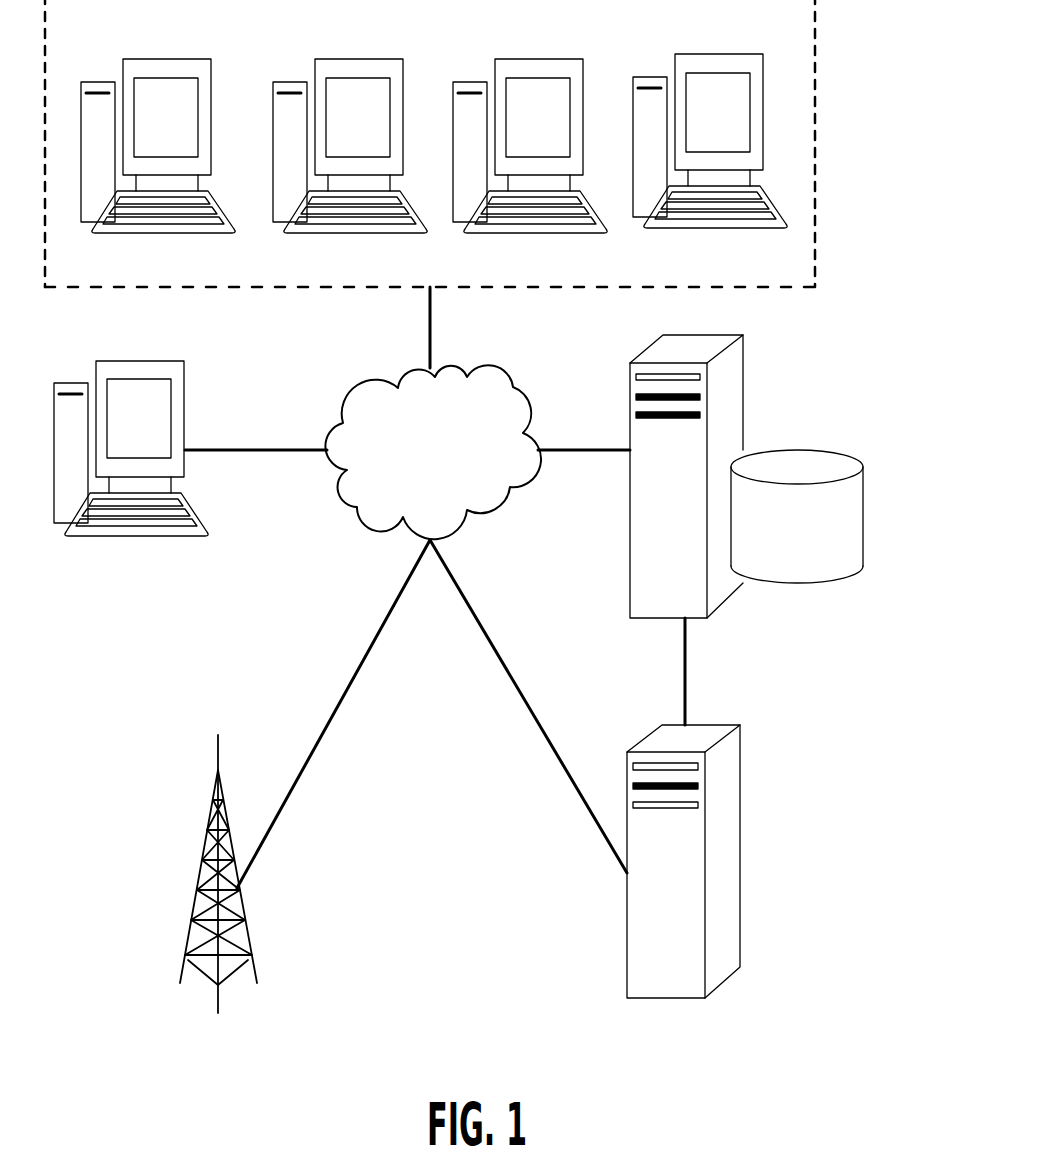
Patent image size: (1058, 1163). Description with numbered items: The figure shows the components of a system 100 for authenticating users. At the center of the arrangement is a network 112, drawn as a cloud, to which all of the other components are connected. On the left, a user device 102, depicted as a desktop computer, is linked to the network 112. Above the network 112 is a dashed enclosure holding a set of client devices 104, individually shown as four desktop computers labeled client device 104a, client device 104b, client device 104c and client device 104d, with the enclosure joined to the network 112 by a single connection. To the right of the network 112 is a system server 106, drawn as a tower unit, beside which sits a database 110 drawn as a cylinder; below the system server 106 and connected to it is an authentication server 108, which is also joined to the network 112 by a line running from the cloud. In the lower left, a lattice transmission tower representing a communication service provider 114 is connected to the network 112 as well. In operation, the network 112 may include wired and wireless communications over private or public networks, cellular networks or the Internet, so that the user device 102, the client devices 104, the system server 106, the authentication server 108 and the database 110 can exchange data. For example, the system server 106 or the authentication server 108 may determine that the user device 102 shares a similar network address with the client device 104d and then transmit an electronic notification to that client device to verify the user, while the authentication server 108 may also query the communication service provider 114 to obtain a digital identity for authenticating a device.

The system 100 is at (912, 138).
The user device 102 is at (131, 448).
The client devices 104 is at (430, 143).
The client device 104a is at (158, 146).
The client device 104b is at (350, 146).
The client device 104c is at (530, 146).
The client device 104d is at (710, 141).
The system server 106 is at (686, 476).
The authentication server 108 is at (683, 861).
The database 110 is at (797, 516).
The network 112 is at (433, 452).
The communication service provider 114 is at (199, 874).